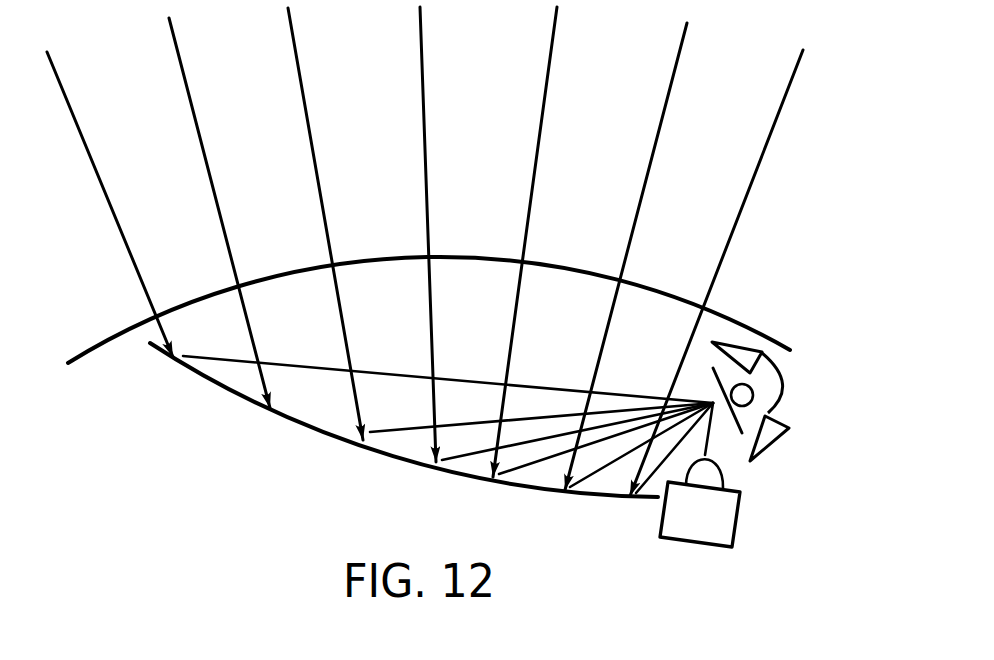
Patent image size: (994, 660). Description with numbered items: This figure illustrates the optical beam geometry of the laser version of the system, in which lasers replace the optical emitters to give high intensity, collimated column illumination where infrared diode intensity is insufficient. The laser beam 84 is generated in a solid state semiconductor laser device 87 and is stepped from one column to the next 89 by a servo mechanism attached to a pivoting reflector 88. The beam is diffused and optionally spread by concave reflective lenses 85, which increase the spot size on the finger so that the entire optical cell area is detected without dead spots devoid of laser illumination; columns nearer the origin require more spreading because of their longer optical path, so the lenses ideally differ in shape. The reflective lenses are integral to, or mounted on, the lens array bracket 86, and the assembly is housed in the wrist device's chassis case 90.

The laser beam 84 is at (133, 268).
The concave reflective lenses 85 is at (268, 416).
The lens array bracket 86 is at (408, 458).
The solid state semiconductor laser device 87 is at (708, 527).
The pivoting reflector 88 is at (733, 418).
The next column 89 is at (783, 387).
The chassis case 90 is at (777, 342).